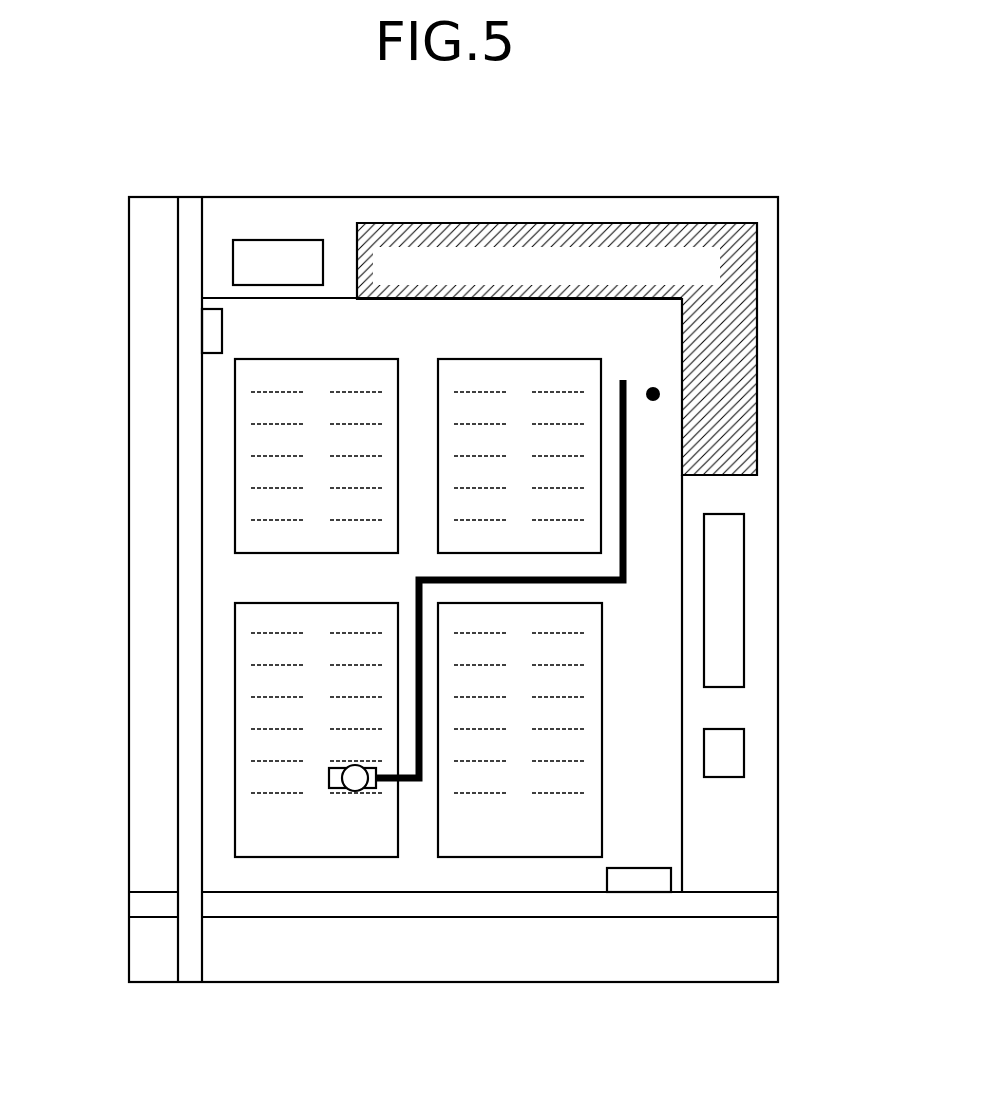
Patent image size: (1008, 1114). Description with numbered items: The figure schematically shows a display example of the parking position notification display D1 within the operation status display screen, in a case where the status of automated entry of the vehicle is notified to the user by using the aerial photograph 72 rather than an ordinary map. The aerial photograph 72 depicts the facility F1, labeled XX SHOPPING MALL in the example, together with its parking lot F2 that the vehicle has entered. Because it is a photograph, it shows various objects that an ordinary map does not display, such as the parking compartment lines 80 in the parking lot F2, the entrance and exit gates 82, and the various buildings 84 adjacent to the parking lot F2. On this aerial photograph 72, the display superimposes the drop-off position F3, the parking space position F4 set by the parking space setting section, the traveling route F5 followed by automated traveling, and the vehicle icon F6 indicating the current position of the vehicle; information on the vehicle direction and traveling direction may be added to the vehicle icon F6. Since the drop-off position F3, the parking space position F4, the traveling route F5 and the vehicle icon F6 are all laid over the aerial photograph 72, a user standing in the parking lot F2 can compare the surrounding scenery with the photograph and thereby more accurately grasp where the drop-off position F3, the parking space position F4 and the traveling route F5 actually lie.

The parking position notification display D1 is at (455, 197).
The aerial photograph 72 is at (760, 705).
The parking compartment lines 80 is at (438, 383).
The entrance and exit gates 82 is at (210, 331).
The buildings 84 is at (277, 255).
The facility F1 is at (745, 368).
The parking lot F2 is at (658, 807).
The drop-off position F3 is at (652, 385).
The parking space position F4 is at (357, 780).
The traveling route F5 is at (627, 580).
The vehicle icon F6 is at (337, 780).